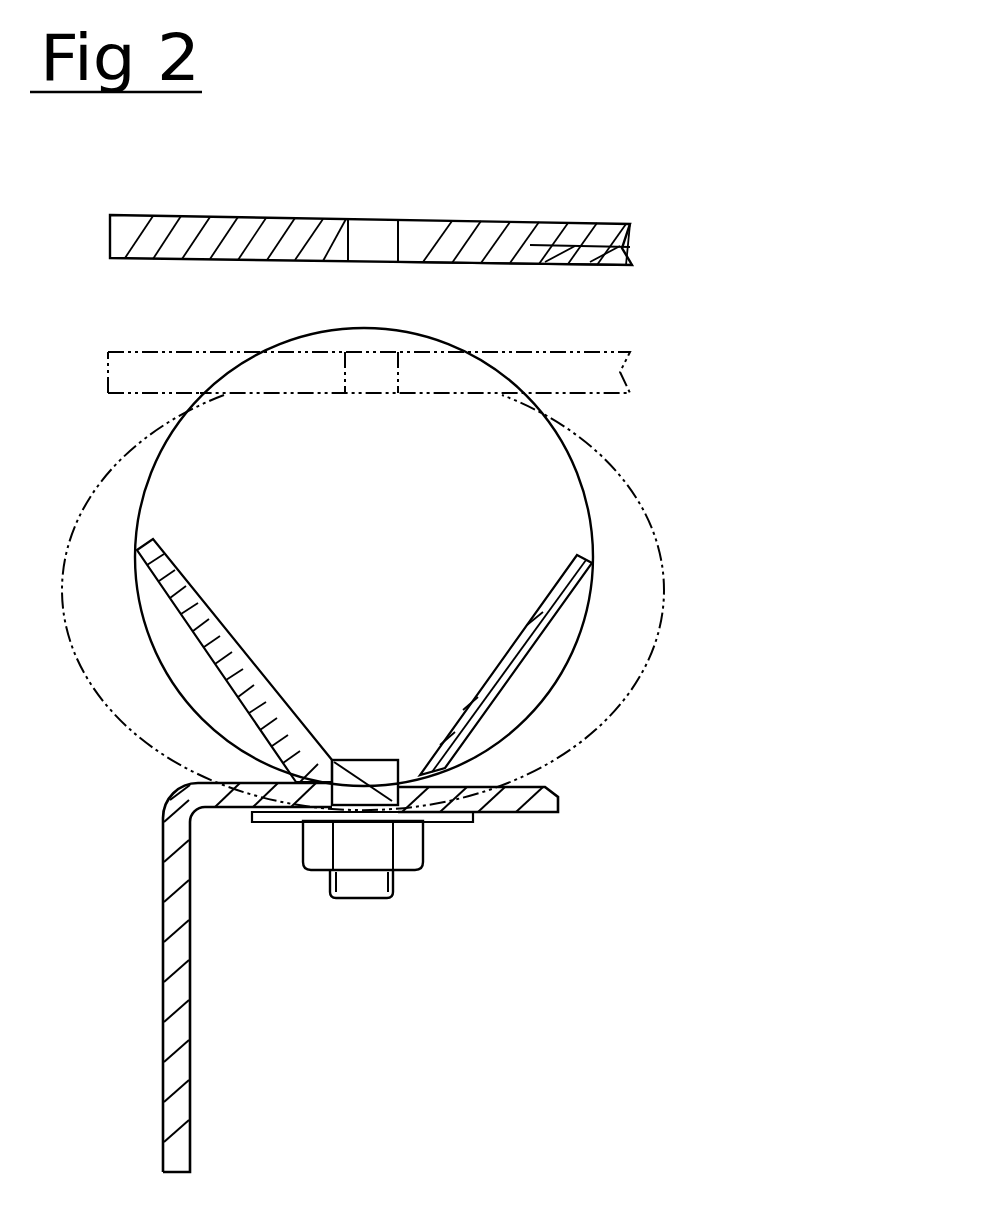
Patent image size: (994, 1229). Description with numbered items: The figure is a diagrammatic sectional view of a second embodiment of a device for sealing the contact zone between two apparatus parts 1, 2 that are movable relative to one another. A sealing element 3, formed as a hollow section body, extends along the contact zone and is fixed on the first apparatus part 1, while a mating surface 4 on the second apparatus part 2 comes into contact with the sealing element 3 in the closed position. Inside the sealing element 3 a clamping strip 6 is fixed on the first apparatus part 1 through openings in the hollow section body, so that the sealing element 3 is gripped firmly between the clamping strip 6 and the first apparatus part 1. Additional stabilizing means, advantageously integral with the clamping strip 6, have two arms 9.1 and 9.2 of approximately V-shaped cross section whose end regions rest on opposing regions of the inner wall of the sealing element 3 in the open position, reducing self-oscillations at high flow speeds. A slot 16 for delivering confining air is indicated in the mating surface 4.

The first apparatus part 1 is at (519, 977).
The second apparatus part 2 is at (500, 233).
The sealing element 3 is at (473, 569).
The mating surface 4 is at (645, 325).
The clamping strip 6 is at (566, 830).
The arm 9.1 is at (506, 787).
The arm 9.2 is at (649, 665).
The slot 16 is at (619, 168).